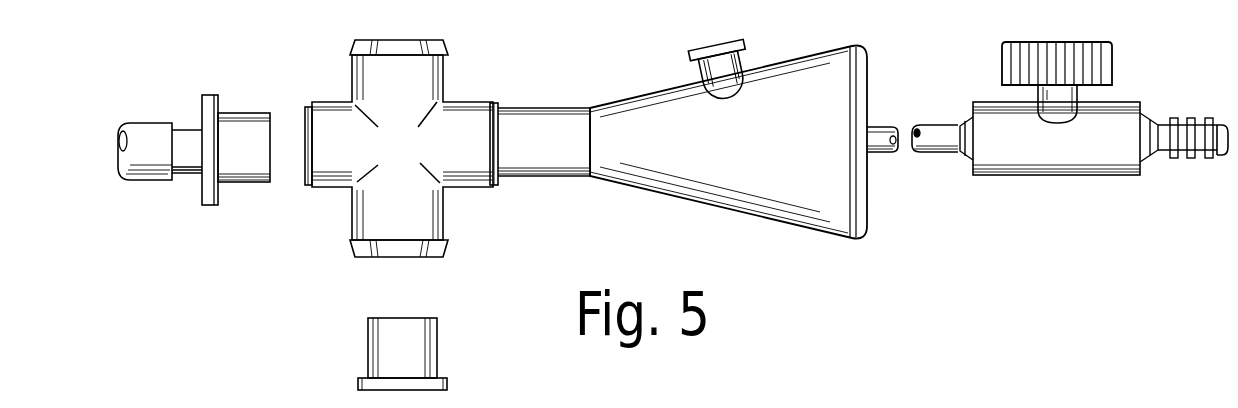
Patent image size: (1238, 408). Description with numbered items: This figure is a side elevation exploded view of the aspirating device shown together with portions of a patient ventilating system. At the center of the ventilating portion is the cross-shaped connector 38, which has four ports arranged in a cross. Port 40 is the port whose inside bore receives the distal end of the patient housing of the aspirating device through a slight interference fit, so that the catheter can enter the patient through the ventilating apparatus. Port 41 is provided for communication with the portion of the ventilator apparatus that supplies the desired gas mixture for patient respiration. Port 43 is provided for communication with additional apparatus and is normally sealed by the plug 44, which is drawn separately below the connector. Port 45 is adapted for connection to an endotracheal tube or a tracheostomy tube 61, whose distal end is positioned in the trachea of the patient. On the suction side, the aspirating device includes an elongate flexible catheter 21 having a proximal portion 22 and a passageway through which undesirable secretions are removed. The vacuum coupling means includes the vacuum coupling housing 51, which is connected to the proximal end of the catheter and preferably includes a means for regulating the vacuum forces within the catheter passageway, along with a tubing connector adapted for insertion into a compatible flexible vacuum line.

The elongate flexible catheter 21 is at (702, 207).
The proximal portion 22 is at (928, 152).
The cross-shaped connector 38 is at (437, 102).
The port 40 is at (473, 191).
The port 41 is at (353, 72).
The port 43 is at (352, 223).
The plug 44 is at (432, 345).
The port 45 is at (322, 190).
The vacuum coupling housing 51 is at (1083, 177).
The tracheostomy tube 61 is at (152, 181).